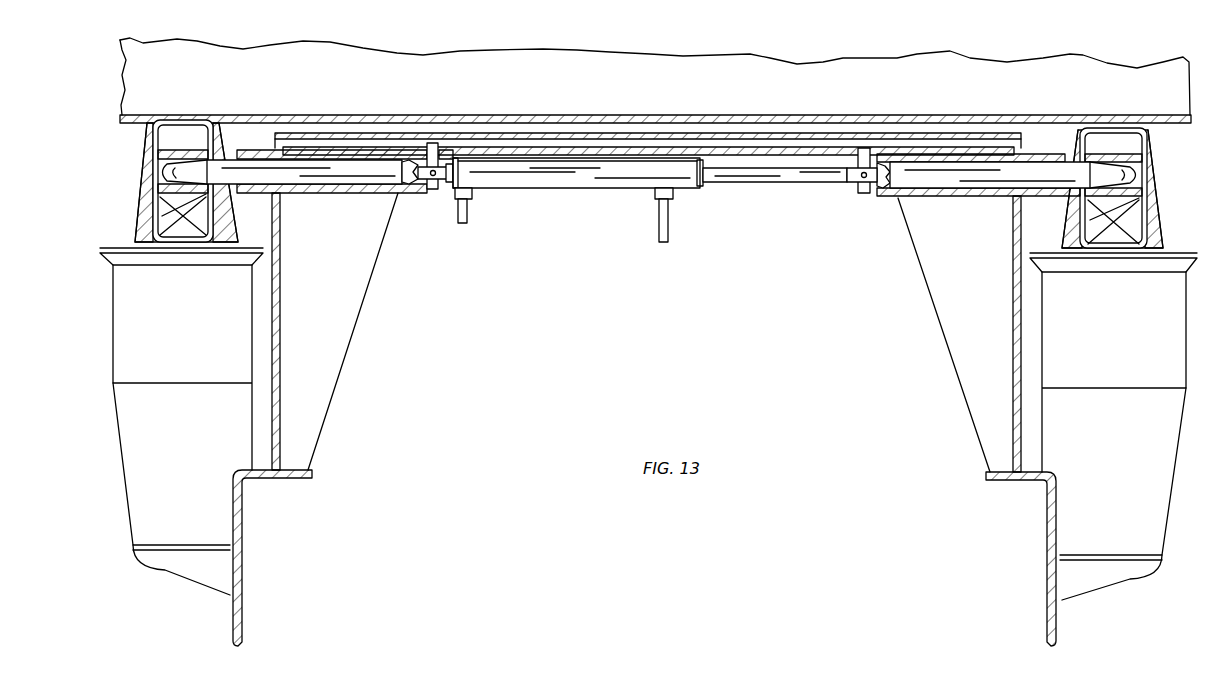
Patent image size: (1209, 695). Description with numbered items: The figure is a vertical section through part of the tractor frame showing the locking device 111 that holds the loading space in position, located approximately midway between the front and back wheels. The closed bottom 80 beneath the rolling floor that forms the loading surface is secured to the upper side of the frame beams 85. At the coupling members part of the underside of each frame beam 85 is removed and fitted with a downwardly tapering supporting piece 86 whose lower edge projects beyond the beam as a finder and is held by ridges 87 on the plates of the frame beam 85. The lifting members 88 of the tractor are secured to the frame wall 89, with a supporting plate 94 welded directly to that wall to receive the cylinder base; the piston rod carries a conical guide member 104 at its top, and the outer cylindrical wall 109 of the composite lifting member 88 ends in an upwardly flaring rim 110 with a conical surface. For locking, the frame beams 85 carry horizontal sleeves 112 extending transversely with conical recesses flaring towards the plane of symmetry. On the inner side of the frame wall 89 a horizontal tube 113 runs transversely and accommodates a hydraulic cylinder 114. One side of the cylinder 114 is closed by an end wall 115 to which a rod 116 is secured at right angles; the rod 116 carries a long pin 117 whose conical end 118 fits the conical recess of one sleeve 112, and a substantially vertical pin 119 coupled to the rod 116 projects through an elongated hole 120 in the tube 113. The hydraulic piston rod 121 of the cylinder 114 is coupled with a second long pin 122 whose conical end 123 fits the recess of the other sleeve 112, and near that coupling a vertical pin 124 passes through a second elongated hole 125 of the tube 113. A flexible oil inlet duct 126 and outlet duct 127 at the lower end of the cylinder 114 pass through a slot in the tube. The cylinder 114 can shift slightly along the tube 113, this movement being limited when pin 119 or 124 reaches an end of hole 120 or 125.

The closed bottom 80 is at (620, 106).
The frame beam 85 is at (153, 207).
The supporting piece 86 is at (178, 230).
The ridges 87 is at (150, 187).
The lifting member 88 is at (257, 349).
The frame wall 89 is at (281, 288).
The supporting plate 94 is at (180, 548).
The conical guide member 104 is at (147, 249).
The cylindrical wall 109 is at (183, 371).
The upwardly flaring rim 110 is at (218, 261).
The locking device 111 is at (384, 258).
The horizontal sleeve 112 is at (177, 153).
The horizontal tube 113 is at (370, 192).
The hydraulic cylinder 114 is at (595, 175).
The end wall 115 is at (455, 170).
The rod 116 is at (443, 189).
The long pin 117 is at (253, 170).
The conical end 118 is at (195, 167).
The vertical pin 119 is at (432, 147).
The elongated hole 120 is at (472, 148).
The hydraulic piston rod 121 is at (773, 173).
The long pin 122 is at (950, 168).
The conical end 123 is at (1107, 170).
The vertical pin 124 is at (865, 157).
The second elongated hole 125 is at (813, 153).
The flexible oil inlet duct 126 is at (468, 210).
The flexible oil outlet duct 127 is at (657, 233).